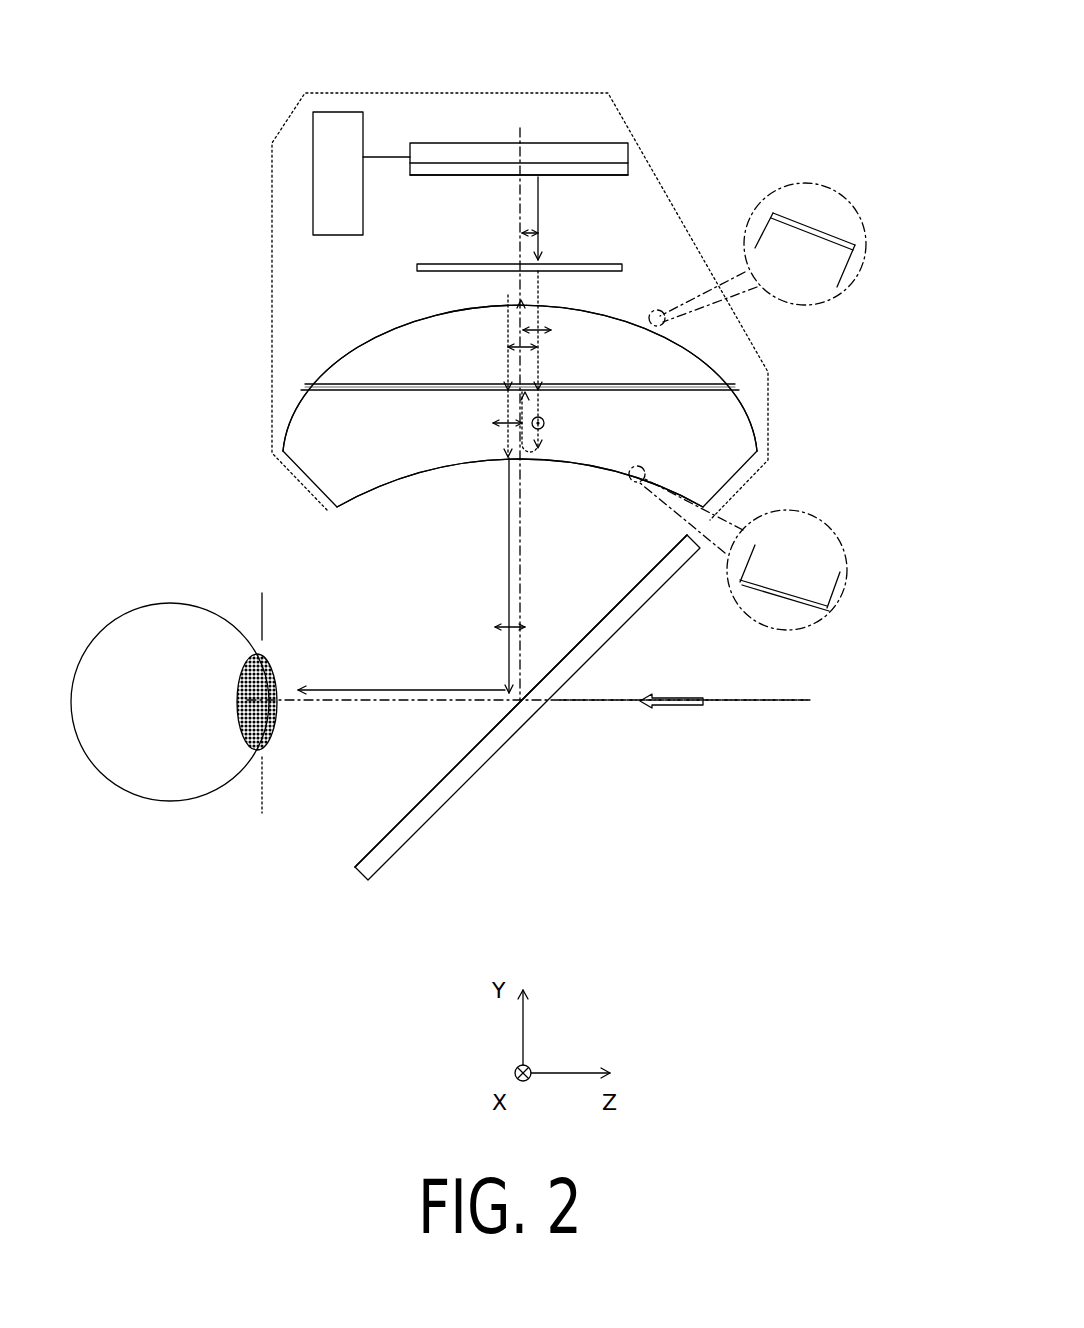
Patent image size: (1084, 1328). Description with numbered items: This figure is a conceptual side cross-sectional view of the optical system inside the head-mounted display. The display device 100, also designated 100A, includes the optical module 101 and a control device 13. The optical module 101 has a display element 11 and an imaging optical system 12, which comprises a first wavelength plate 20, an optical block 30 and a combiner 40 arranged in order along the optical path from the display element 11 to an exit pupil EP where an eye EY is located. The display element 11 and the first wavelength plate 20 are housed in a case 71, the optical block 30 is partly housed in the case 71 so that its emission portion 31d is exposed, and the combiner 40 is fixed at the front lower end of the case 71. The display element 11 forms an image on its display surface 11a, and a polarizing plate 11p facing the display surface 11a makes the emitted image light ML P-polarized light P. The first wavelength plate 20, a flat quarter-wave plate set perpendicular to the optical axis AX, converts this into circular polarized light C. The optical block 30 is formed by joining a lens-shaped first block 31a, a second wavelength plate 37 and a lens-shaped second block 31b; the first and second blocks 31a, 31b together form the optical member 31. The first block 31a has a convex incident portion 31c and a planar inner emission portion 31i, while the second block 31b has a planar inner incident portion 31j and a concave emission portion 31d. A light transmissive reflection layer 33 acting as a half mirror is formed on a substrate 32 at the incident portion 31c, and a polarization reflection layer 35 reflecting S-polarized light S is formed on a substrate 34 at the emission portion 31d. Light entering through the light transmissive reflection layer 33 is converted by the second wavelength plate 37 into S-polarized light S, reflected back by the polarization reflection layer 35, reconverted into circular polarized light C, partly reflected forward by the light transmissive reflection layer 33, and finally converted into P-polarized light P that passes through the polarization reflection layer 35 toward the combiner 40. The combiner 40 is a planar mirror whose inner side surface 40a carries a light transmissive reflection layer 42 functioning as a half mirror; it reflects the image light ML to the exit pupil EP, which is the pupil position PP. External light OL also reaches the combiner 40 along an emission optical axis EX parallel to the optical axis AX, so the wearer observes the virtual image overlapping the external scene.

The display device 100 is at (692, 98).
The virtual image display device (first embodiment) 100A is at (535, 456).
The case 71 is at (280, 125).
The optical module 101 is at (682, 158).
The control device 13 is at (338, 125).
The display element 11 is at (555, 155).
The display surface 11a is at (476, 177).
The polarizing plate 11p is at (497, 177).
The first wavelength plate 20 is at (622, 268).
The imaging optical system 12 is at (707, 209).
The optical block 30 is at (757, 380).
The optical member 31 is at (198, 318).
The first block 31a is at (340, 353).
The second block 31b is at (333, 430).
The incident portion 31c is at (368, 322).
The emission portion 31d is at (395, 490).
The inner emission portion 31i is at (690, 392).
The inner incident portion 31j is at (650, 383).
The second wavelength plate 37 is at (668, 384).
The light transmissive reflection layer 33 is at (850, 236).
The substrate 32 is at (842, 267).
The substrate 34 is at (827, 580).
The polarization reflection layer 35 is at (828, 608).
The combiner 40 is at (432, 815).
The inner side surface 40a is at (445, 785).
The light transmissive reflection layer 42 is at (514, 701).
The optical axis AX is at (520, 575).
The image light ML is at (542, 190).
The P-polarized light P is at (523, 430).
The circular polarized light C is at (531, 339).
The S-polarized light S is at (551, 422).
The eye EY is at (115, 630).
The exit pupil EP is at (265, 757).
The pupil position PP is at (262, 817).
The emission optical axis EX is at (593, 702).
The external light OL is at (668, 710).